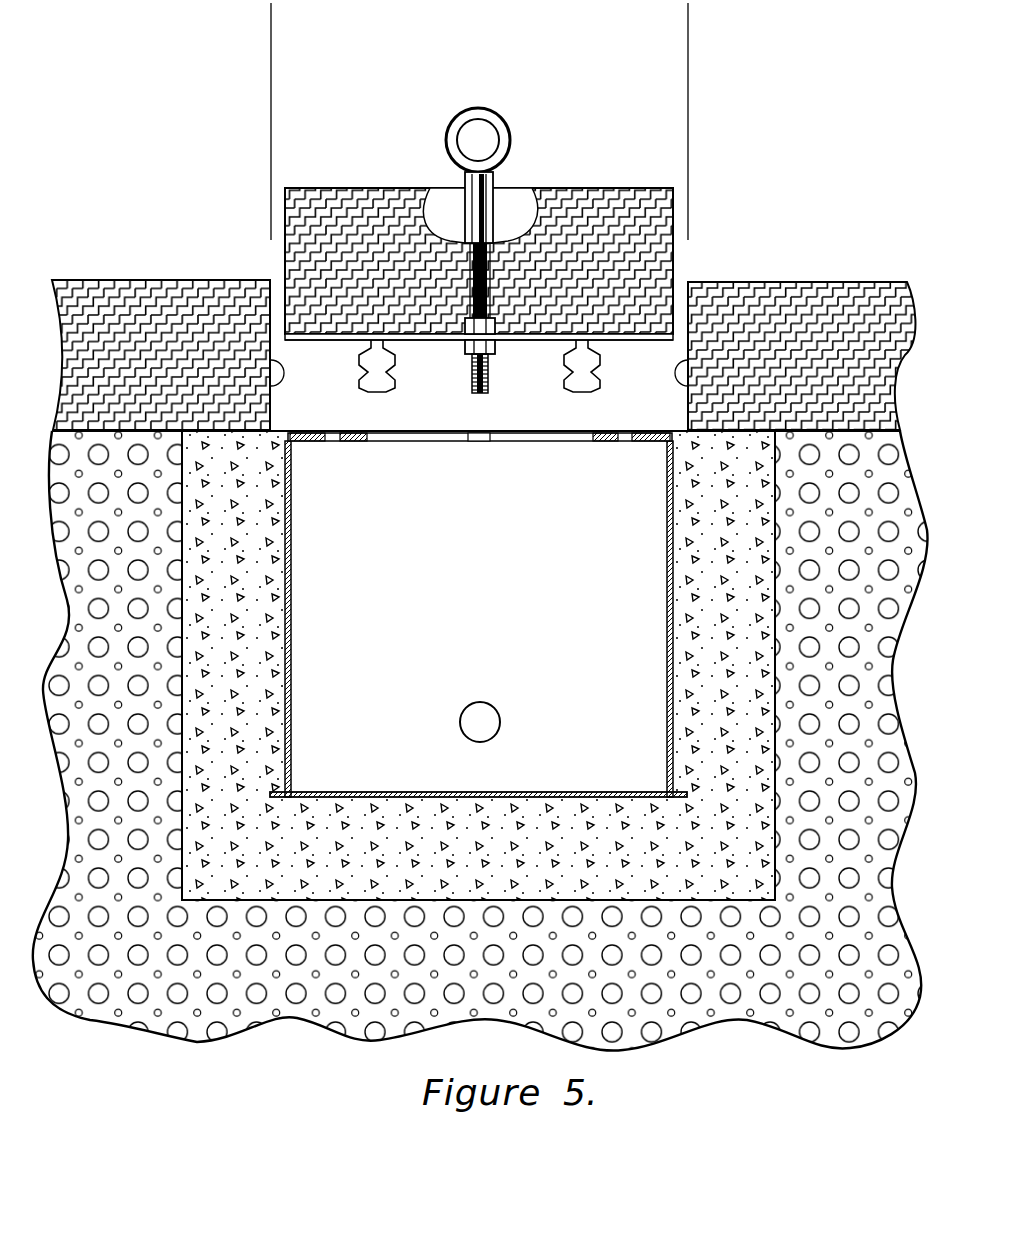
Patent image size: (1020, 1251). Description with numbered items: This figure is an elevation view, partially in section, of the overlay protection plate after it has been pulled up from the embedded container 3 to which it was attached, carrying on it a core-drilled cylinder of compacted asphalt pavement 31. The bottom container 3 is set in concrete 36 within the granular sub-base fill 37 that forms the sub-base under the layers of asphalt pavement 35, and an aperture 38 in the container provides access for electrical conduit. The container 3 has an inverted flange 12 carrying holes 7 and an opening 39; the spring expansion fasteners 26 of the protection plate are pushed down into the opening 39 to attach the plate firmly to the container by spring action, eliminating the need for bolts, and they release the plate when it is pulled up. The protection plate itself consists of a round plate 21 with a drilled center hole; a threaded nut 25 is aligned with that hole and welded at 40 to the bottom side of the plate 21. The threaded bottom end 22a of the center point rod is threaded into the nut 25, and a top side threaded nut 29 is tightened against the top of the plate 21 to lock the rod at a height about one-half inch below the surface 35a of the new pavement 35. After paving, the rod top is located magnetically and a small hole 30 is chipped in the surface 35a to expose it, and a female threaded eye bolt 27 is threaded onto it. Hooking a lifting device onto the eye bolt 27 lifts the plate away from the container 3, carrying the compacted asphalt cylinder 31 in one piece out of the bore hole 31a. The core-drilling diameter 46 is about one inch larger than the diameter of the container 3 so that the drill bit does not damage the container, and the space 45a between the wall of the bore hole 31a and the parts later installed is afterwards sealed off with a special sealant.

The embedded container 3 is at (665, 617).
The holes 7 is at (333, 445).
The inverted flange 12 is at (308, 445).
The plate 21 is at (607, 341).
The bottom end of center point rod 22a is at (505, 420).
The threaded nut 25 is at (490, 372).
The spring expansion fasteners 26 is at (388, 392).
The female threaded eye bolt 27 is at (512, 118).
The top side threaded nut 29 is at (466, 332).
The small hole 30 is at (446, 188).
The core-drilled compacted asphalt cylinder 31 is at (479, 261).
The bore hole 31a is at (479, 369).
The asphalt pavement 35 is at (483, 355).
The pavement surface 35a is at (135, 280).
The concrete 36 is at (478, 665).
The granular sub-base fill 37 is at (480, 741).
The aperture 38 is at (497, 707).
The opening 39 is at (407, 445).
The weld 40 is at (466, 352).
The space 45a is at (278, 388).
The core-drilling diameter 46 is at (688, 22).